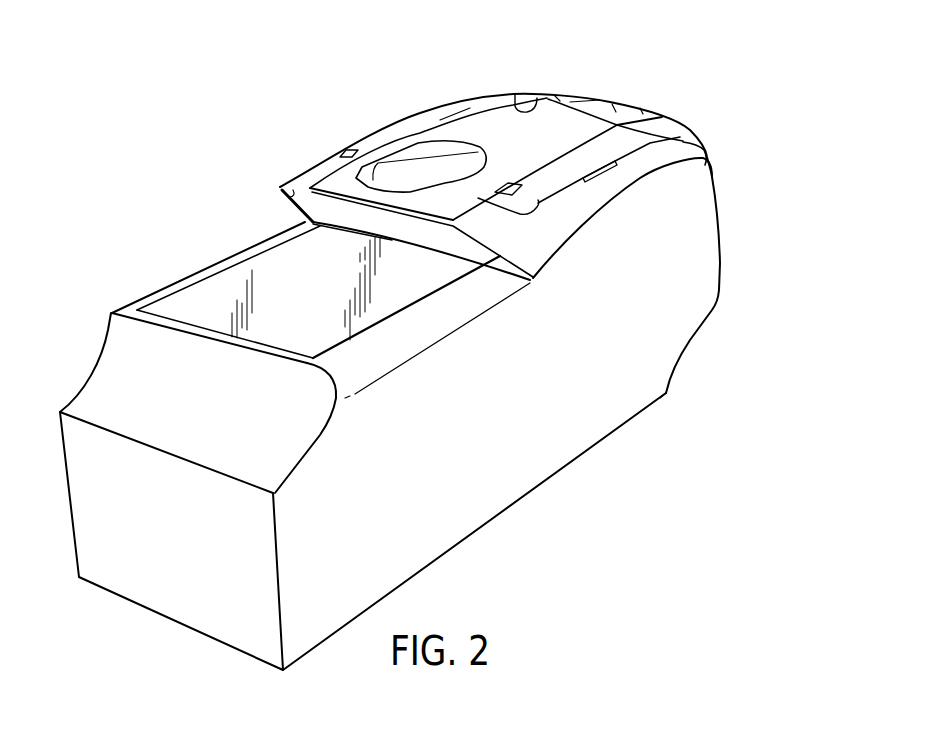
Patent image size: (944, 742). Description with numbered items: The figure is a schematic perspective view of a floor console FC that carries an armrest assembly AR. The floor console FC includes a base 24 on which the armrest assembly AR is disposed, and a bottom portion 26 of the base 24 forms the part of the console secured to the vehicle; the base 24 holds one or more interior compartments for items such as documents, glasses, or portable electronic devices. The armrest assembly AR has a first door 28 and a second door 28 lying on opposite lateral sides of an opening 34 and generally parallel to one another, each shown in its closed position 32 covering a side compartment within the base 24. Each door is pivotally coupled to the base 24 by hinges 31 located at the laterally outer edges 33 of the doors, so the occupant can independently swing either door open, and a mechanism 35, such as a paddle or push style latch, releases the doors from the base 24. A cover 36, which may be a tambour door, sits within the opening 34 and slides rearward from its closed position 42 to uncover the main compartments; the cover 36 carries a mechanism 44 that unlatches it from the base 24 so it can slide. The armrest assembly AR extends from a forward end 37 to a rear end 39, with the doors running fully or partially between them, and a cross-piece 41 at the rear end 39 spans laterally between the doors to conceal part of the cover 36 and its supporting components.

The base 24 is at (705, 222).
The bottom portion 26 is at (420, 565).
The first and second doors 28 is at (385, 137).
The hinges 31 is at (607, 168).
The closed position 32 is at (672, 114).
The laterally outer edges 33 is at (703, 148).
The opening 34 is at (515, 96).
The mechanism 35 is at (338, 154).
The cover 36 is at (557, 117).
The forward end 37 is at (292, 194).
The rear end 39 is at (640, 110).
The cross-piece 41 is at (615, 113).
The closed position 42 is at (578, 99).
The mechanism 44 is at (402, 177).
The armrest assembly AR is at (473, 88).
The floor console FC is at (682, 408).